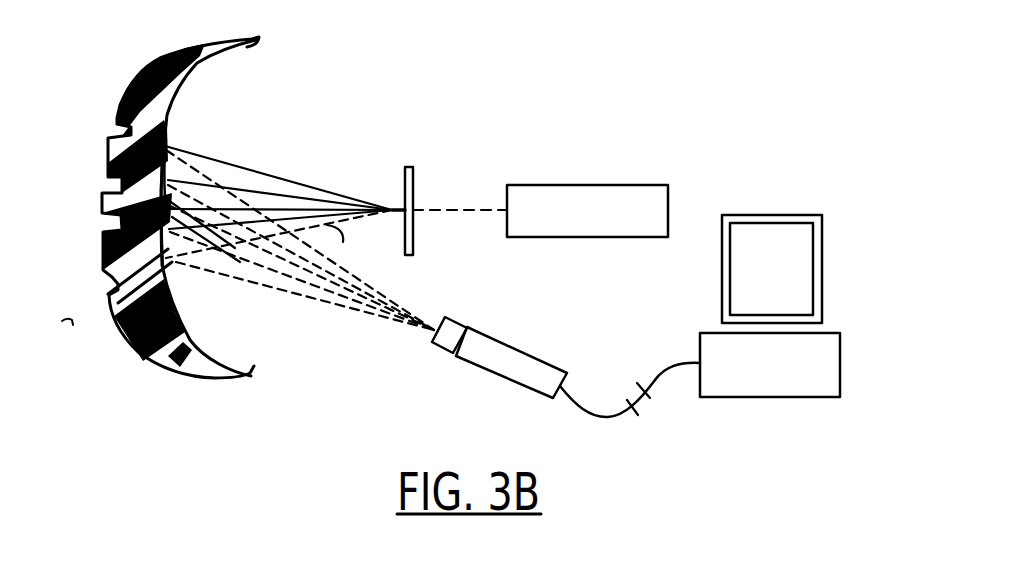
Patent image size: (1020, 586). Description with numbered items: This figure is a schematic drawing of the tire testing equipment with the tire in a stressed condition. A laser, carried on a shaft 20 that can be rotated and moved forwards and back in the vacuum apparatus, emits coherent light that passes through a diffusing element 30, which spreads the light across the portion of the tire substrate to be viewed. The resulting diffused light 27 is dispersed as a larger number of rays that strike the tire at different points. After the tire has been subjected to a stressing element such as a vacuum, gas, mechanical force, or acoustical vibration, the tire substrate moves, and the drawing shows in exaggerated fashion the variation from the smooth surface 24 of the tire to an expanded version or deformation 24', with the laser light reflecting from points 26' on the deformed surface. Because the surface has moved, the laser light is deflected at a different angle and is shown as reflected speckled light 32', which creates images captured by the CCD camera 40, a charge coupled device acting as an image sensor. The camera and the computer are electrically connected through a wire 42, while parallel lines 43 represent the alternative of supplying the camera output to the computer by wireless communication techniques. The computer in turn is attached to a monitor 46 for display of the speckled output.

The shaft 20 is at (633, 186).
The inner surface 24 is at (160, 207).
The deformation 24' is at (231, 192).
The points 26' is at (149, 233).
The diffused light 27 is at (303, 188).
The diffusing element 30 is at (414, 172).
The reflected speckled light 32' is at (310, 256).
The camera 40 is at (520, 353).
The wire 42 is at (600, 418).
The parallel lines 43 is at (648, 397).
The monitor 46 is at (823, 244).